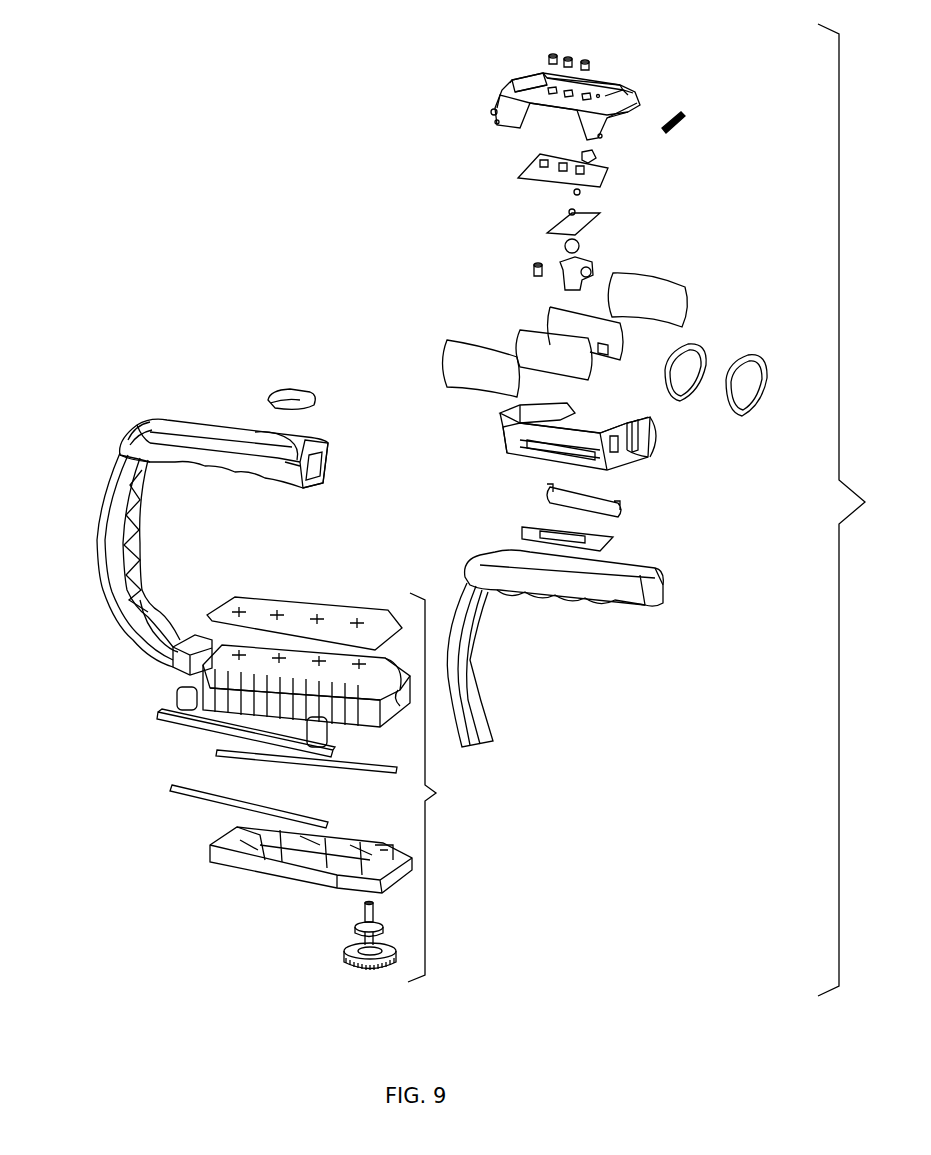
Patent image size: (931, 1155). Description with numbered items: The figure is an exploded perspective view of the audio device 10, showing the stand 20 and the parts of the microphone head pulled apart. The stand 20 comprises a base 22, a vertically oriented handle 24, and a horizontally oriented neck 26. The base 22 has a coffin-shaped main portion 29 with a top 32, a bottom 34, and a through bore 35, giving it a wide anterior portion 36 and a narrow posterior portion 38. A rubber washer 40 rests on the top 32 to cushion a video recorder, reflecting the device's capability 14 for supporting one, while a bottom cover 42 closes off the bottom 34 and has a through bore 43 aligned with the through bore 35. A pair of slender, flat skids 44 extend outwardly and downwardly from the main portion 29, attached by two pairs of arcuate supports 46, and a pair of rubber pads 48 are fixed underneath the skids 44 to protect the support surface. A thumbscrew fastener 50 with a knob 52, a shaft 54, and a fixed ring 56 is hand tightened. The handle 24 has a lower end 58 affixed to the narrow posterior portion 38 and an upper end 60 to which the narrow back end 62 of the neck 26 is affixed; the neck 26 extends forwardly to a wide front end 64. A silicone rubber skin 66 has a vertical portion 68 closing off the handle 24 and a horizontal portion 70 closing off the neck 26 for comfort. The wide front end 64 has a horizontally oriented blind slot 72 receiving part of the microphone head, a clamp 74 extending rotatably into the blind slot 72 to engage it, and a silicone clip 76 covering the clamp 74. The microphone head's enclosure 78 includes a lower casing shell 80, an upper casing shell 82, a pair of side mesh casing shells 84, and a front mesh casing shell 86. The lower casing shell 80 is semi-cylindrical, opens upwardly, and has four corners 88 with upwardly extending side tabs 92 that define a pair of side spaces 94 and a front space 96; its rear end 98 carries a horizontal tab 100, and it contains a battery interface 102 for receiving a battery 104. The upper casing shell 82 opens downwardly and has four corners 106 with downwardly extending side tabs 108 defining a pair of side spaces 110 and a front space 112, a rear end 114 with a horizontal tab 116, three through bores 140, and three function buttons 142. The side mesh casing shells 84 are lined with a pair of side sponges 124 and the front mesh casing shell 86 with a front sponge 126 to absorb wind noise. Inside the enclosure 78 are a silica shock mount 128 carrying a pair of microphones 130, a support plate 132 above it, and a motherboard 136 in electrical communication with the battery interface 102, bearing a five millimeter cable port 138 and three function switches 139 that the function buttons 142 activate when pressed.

The audio device 10 is at (234, 199).
The capability for physically supporting a video recorder 14 is at (335, 957).
The stand 20 is at (92, 482).
The base 22 is at (293, 777).
The handle 24 is at (100, 538).
The neck 26 is at (183, 420).
The main portion 29 is at (398, 705).
The top 32 is at (228, 640).
The bottom 34 is at (250, 718).
The through bore 35 is at (368, 635).
The wide anterior portion 36 is at (340, 710).
The narrow posterior portion 38 is at (200, 640).
The rubber washer 40 is at (262, 605).
The bottom cover 42 is at (232, 852).
The through bore 43 is at (385, 845).
The pair of skids 44 is at (175, 722).
The arcuate supports 46 is at (175, 697).
The pair of rubber pads 48 is at (262, 800).
The thumbscrew fastener 50 is at (368, 970).
The knob 52 is at (345, 955).
The shaft 54 is at (363, 913).
The fixed ring 56 is at (352, 929).
The lower end 58 is at (150, 668).
The upper end 60 is at (140, 426).
The narrow back end 62 is at (141, 437).
The wide front end 64 is at (288, 470).
The silicone rubber skin 66 is at (615, 612).
The vertical portion 68 is at (478, 680).
The horizontal portion 70 is at (540, 595).
The blind slot 72 is at (330, 470).
The clamp 74 is at (262, 432).
The silicone clip 76 is at (305, 392).
The enclosure 78 is at (444, 102).
The lower casing shell 80 is at (487, 445).
The upper casing shell 82 is at (500, 92).
The pair of side mesh casing shells 84 is at (450, 355).
The front mesh casing shell 86 is at (760, 375).
The four corners 88 is at (655, 440).
The side tabs 92 is at (650, 508).
The pair of side spaces 94 is at (540, 473).
The front space 96 is at (655, 450).
The rear end 98 is at (460, 406).
The tab 100 is at (462, 417).
The battery interface 102 is at (525, 530).
The battery 104 is at (545, 495).
The four corners 106 is at (497, 120).
The side tabs 108 is at (497, 122).
The pair of side spaces 110 is at (548, 76).
The front space 112 is at (653, 128).
The rear end 114 is at (520, 80).
The tab 116 is at (492, 110).
The pair of side sponges 124 is at (520, 335).
The front sponge 126 is at (702, 360).
The silica shock mount 128 is at (585, 262).
The pair of microphones 130 is at (535, 267).
The support plate 132 is at (555, 225).
The motherboard 136 is at (603, 180).
The 5 mm cable port 138 is at (585, 160).
The three function switches 139 is at (530, 165).
The three through bores 140 is at (612, 92).
The three function buttons 142 is at (586, 62).